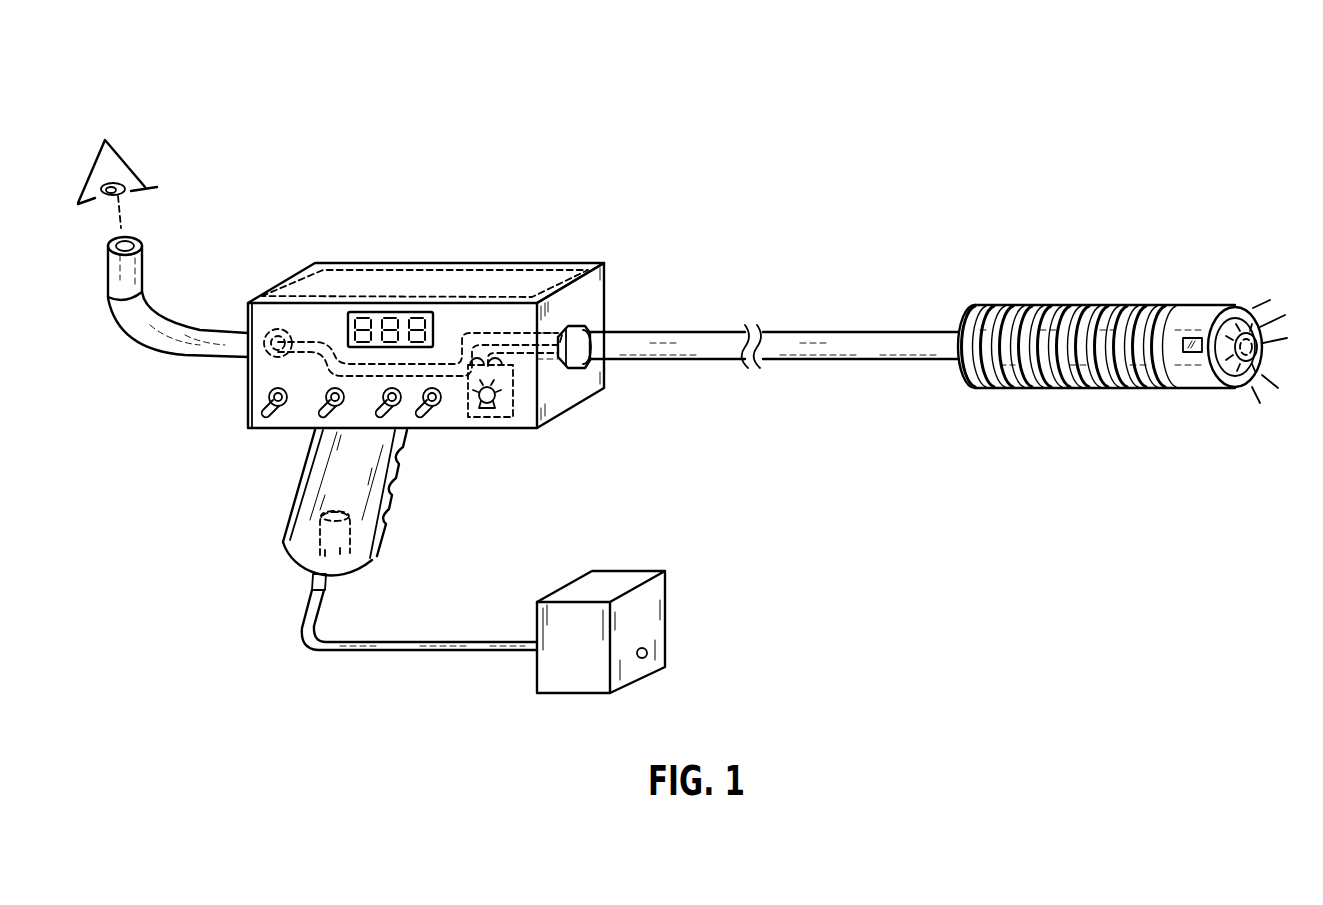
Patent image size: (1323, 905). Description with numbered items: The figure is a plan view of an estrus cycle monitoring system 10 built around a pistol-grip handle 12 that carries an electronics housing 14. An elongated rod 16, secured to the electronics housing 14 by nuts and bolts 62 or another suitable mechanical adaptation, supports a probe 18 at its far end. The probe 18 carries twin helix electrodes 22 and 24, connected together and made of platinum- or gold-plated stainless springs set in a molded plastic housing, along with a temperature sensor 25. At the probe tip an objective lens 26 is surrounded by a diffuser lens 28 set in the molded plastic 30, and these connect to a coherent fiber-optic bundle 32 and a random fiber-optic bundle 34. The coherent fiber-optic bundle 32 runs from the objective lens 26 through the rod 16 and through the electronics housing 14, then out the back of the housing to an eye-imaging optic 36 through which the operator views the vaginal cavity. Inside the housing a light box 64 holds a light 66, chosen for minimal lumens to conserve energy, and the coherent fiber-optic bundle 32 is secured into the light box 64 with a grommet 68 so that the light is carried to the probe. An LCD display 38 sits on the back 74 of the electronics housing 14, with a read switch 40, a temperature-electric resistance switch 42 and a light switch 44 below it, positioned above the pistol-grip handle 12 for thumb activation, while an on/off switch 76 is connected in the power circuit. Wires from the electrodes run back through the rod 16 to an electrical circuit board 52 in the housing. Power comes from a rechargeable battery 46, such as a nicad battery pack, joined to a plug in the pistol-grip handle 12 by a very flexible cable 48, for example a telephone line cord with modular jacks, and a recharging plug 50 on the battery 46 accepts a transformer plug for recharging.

The estrus cycle monitoring system 10 is at (703, 152).
The pistol-grip handle 12 is at (377, 550).
The electronics housing 14 is at (568, 412).
The elongated rod 16 is at (640, 364).
The probe 18 is at (983, 388).
The twin helix electrode 22 is at (1193, 315).
The twin helix electrode 24 is at (1164, 312).
The temperature sensor 25 is at (1187, 352).
The objective lens 26 is at (1263, 362).
The diffuser lens 28 is at (1237, 383).
The molded plastic 30 is at (1208, 382).
The coherent fiber-optic bundle 32 is at (482, 333).
The random fiber-optic bundle 34 is at (542, 357).
The eye-imaging optic 36 is at (148, 252).
The LCD display 38 is at (433, 325).
The read switch 40 is at (287, 394).
The temperature-electric resistance switch 42 is at (344, 394).
The light switch 44 is at (401, 394).
The rechargeable battery 46 is at (633, 570).
The flexible cable 48 is at (412, 640).
The recharging plug 50 is at (645, 658).
The electrical circuit board 52 is at (523, 270).
The nuts and bolts 62 is at (570, 326).
The light box 64 is at (490, 417).
The light 66 is at (495, 401).
The grommet 68 is at (475, 369).
The back of the electronics housing 74 is at (243, 375).
The on/off switch 76 is at (440, 408).